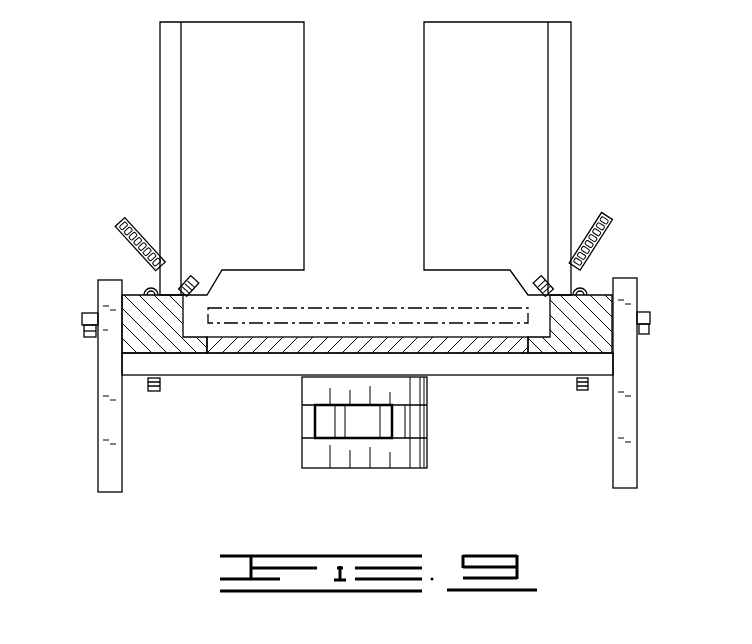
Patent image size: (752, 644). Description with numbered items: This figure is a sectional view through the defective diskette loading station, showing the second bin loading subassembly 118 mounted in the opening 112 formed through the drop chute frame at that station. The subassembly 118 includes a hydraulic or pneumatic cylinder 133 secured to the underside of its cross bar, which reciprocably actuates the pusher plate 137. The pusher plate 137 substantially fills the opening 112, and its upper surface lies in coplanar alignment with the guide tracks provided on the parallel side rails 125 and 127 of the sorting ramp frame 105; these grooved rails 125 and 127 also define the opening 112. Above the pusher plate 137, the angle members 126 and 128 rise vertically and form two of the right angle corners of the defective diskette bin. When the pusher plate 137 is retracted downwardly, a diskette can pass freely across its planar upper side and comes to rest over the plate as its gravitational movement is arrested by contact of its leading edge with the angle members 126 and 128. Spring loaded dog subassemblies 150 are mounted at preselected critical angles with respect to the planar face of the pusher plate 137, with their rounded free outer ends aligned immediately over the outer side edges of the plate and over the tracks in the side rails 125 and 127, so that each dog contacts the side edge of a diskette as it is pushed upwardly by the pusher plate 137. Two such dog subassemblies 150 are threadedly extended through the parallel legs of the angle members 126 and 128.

The sorting ramp frame 105 is at (546, 304).
The opening 112 is at (526, 342).
The second bin loading subassembly 118 is at (294, 463).
The grooved rail 125 is at (136, 338).
The angle member 126 is at (257, 111).
The grooved rail 127 is at (597, 301).
The angle member 128 is at (501, 111).
The hydraulic or pneumatic cylinder 133 is at (380, 425).
The pusher plate 137 is at (241, 308).
The spring loaded dog subassembly 150 is at (125, 212).